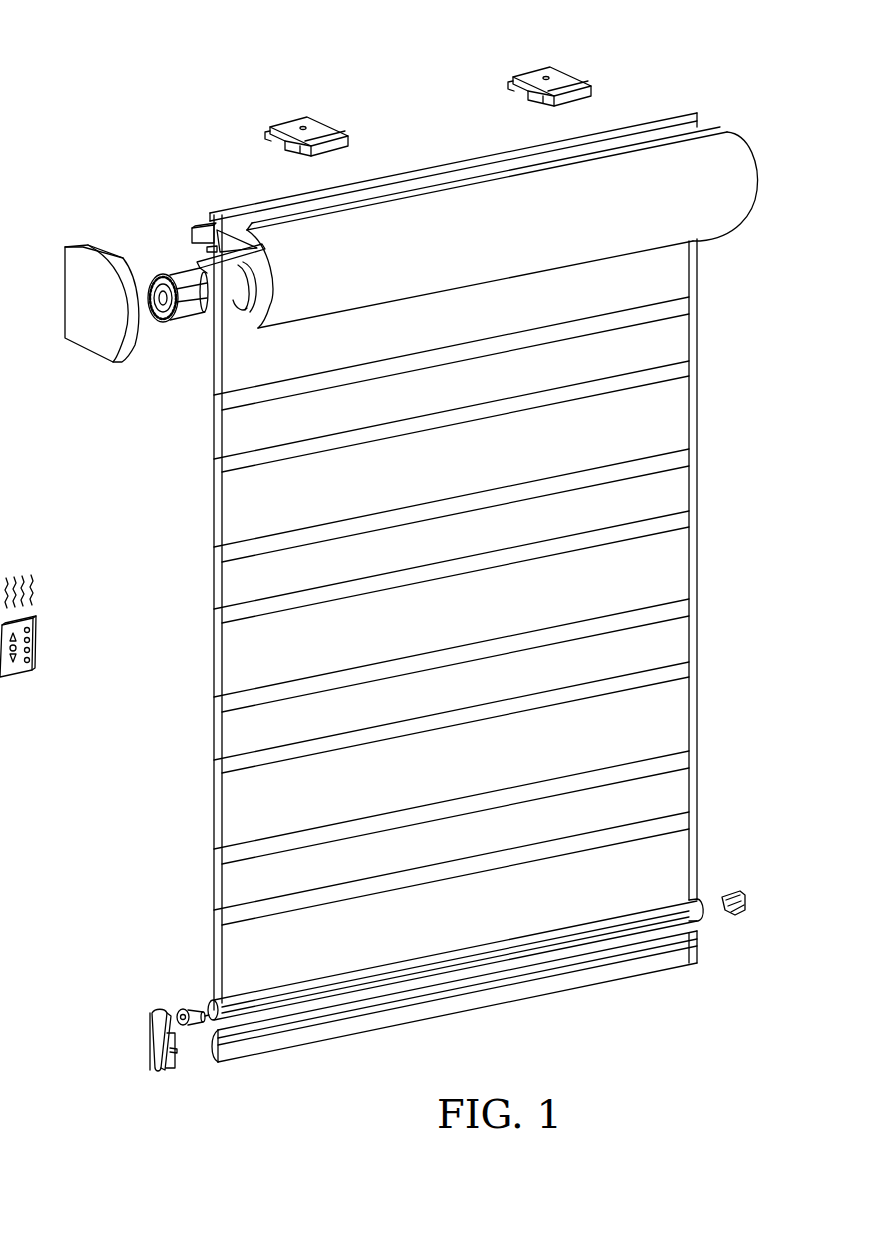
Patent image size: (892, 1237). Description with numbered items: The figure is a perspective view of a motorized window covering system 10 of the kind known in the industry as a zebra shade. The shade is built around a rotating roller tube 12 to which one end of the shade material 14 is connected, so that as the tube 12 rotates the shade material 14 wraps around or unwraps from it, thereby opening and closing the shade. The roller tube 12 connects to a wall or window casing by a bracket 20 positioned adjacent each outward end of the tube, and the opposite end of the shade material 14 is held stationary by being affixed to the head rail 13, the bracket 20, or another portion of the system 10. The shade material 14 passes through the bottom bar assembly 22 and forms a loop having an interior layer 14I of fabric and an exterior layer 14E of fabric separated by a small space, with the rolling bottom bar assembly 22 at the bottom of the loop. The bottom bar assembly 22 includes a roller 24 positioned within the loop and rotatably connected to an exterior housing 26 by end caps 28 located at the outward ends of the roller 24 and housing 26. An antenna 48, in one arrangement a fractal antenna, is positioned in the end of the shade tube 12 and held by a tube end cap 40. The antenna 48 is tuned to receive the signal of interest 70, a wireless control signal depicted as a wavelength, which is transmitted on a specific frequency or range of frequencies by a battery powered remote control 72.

The motorized window covering system 10 is at (75, 90).
The roller tube 12 is at (237, 303).
The head rail 13 is at (205, 217).
The shade material 14 is at (200, 791).
The exterior layer 14E is at (212, 662).
The interior layer 14I is at (228, 710).
The bracket 20 is at (82, 244).
The bottom bar assembly 22 is at (118, 1018).
The roller 24 is at (210, 1005).
The exterior housing 26 is at (213, 1053).
The end cap 28 is at (153, 1052).
The tube end cap 40 is at (182, 270).
The antenna 48 is at (153, 278).
The signal of interest 70 is at (44, 598).
The remote control 72 is at (42, 627).